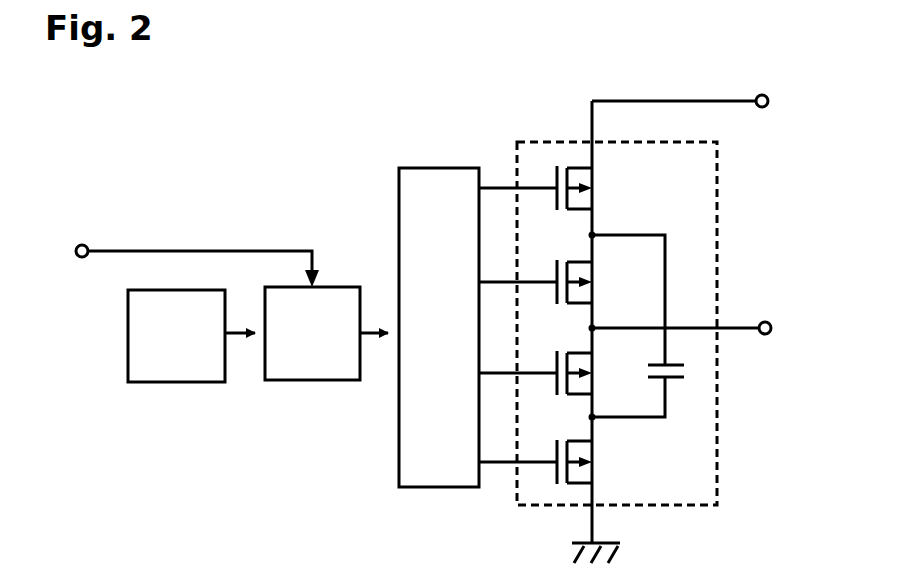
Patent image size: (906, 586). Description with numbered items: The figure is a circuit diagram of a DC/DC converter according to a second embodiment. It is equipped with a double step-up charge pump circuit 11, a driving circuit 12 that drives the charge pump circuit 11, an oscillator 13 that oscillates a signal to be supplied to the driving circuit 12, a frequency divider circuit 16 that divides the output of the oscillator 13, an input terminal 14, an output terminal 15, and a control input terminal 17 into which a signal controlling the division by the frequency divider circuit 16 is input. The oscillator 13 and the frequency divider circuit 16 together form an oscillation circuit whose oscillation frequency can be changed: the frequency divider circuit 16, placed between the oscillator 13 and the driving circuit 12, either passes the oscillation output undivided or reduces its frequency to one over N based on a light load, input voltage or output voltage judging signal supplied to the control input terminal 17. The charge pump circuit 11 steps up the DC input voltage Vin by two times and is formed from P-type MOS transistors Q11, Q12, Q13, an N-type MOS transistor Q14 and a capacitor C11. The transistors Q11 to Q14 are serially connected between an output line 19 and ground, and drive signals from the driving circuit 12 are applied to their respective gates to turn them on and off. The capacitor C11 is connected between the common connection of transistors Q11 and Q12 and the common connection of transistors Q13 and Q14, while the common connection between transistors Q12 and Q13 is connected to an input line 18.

The charge pump circuit 11 is at (544, 142).
The driving circuit 12 is at (427, 168).
The oscillator 13 is at (176, 383).
The input terminal 14 is at (765, 320).
The output terminal 15 is at (762, 95).
The frequency divider circuit 16 is at (312, 381).
The control input terminal 17 is at (83, 244).
The input line 18 is at (740, 331).
The output line 19 is at (677, 101).
The P-type MOS transistor Q11 is at (557, 188).
The P-type MOS transistor Q12 is at (557, 282).
The P-type MOS transistor Q13 is at (557, 373).
The N-type MOS transistor Q14 is at (559, 462).
The capacitor C11 is at (650, 326).